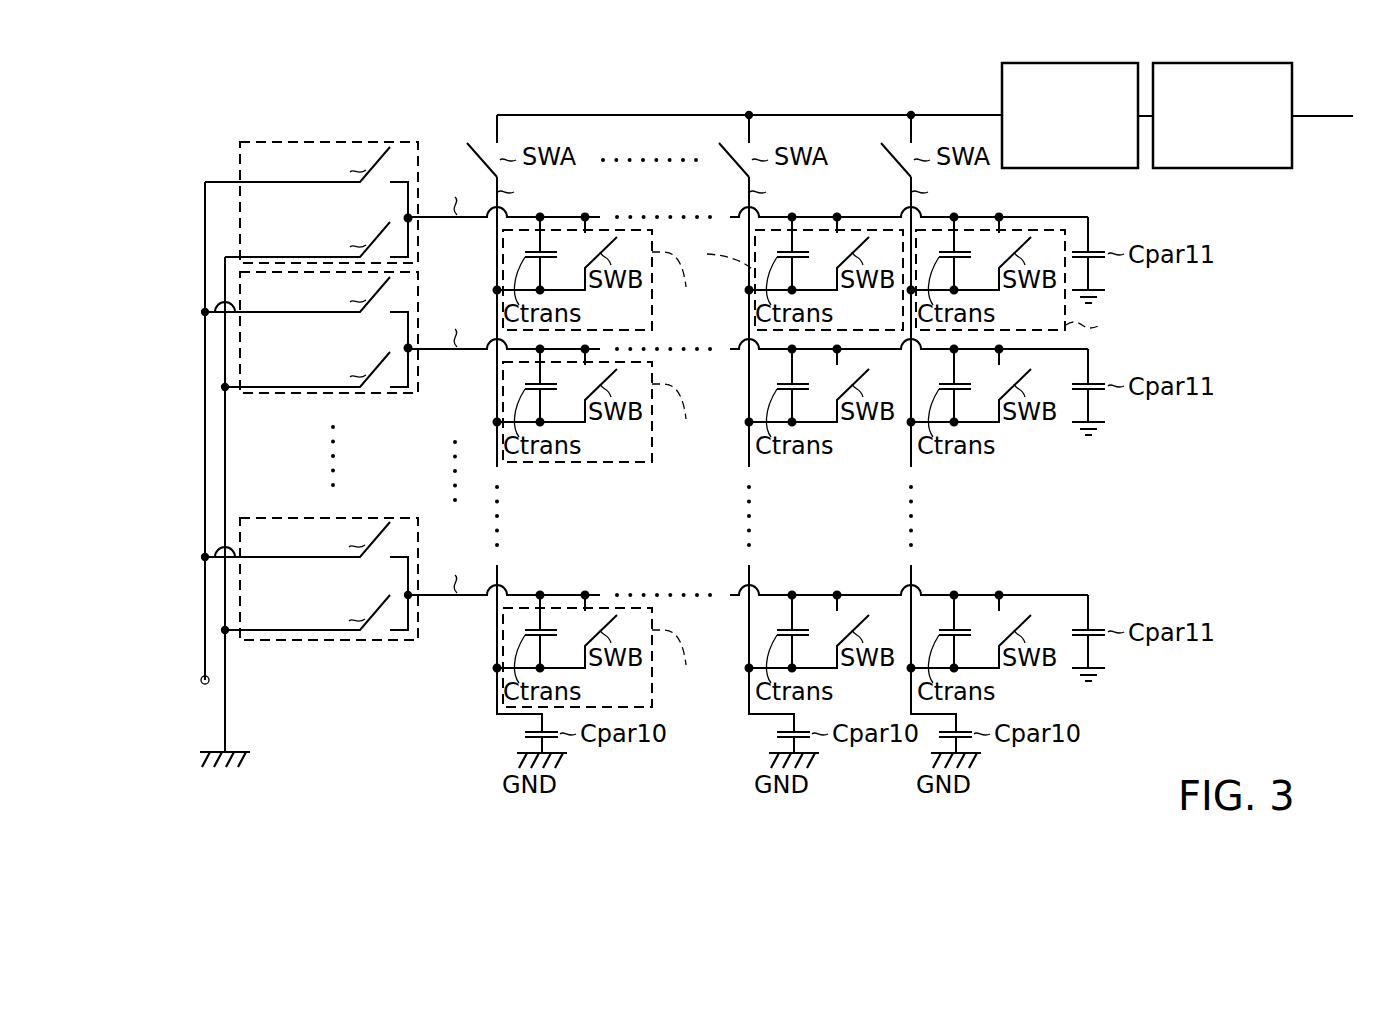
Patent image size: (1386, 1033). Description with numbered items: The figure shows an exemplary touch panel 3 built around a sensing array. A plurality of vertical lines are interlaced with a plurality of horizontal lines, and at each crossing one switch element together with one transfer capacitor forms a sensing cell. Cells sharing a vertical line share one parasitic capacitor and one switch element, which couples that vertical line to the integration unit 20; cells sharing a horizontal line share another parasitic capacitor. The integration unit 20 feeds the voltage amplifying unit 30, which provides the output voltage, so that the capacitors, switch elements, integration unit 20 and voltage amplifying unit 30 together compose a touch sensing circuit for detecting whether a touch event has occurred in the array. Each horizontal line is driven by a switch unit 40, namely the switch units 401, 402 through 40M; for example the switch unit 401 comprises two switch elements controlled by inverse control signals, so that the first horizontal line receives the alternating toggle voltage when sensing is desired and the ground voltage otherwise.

The touch panel 3 is at (210, 94).
The integration unit 20 is at (1070, 64).
The voltage amplifying unit 30 is at (1221, 64).
The switch unit 40 is at (345, 395).
The switch unit 401 is at (419, 237).
The switch unit 402 is at (419, 369).
The switch unit 40M is at (419, 615).